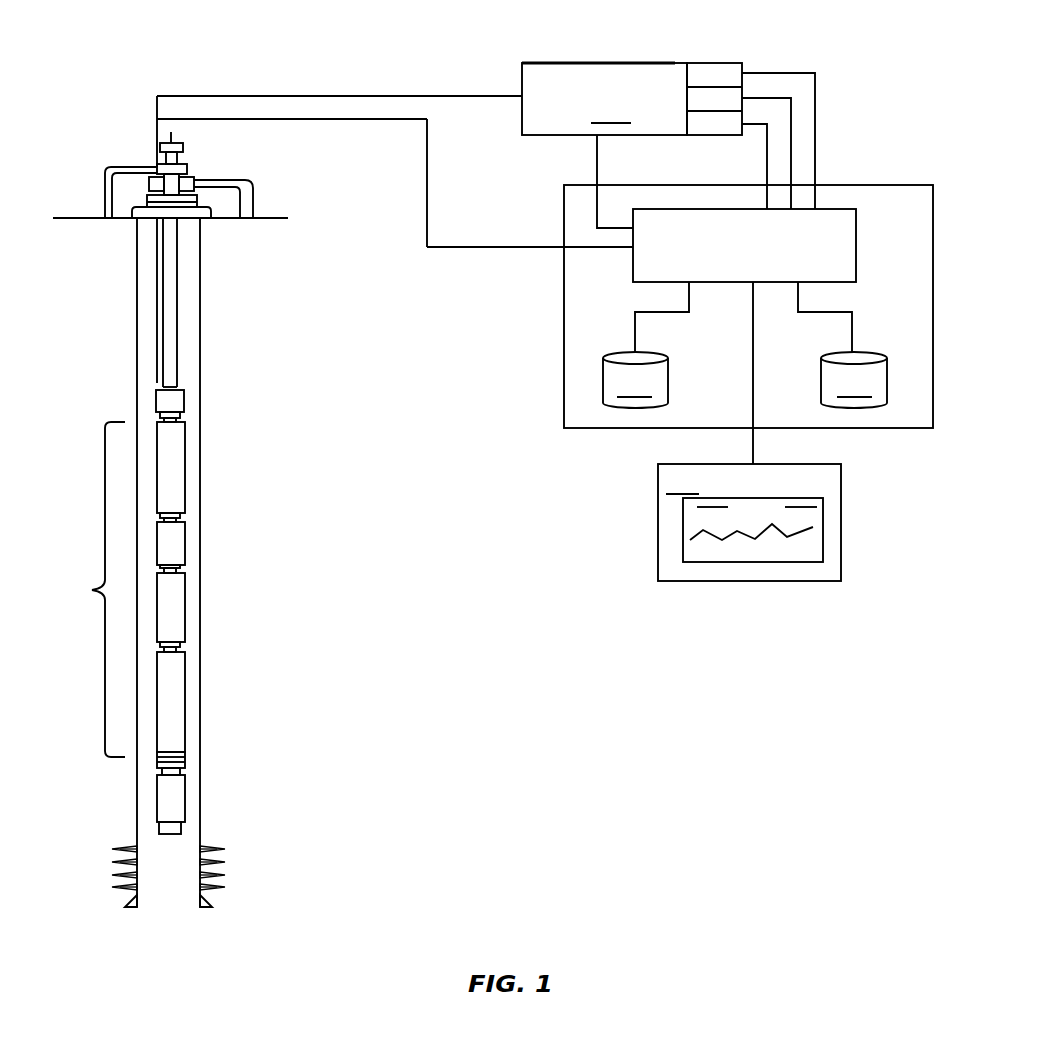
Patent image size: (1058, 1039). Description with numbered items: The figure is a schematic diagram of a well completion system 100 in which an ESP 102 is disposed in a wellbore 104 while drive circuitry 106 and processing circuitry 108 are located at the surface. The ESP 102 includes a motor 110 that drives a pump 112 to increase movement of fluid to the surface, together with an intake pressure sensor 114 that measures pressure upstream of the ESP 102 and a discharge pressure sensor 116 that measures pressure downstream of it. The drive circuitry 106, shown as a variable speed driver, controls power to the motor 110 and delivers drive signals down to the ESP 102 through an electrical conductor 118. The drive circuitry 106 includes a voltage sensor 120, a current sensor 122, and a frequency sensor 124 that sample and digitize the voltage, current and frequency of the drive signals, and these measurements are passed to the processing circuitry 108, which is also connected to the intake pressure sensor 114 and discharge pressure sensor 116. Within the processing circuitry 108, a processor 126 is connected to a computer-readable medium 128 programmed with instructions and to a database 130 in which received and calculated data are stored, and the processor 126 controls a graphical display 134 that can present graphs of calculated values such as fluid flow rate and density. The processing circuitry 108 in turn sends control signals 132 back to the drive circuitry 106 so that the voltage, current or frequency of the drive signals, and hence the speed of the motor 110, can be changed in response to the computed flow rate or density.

The well completion system 100 is at (100, 336).
The ESP 102 is at (86, 589).
The wellbore 104 is at (310, 580).
The drive circuitry 106 is at (604, 99).
The processing circuitry 108 is at (862, 185).
The motor 110 is at (172, 705).
The pump 112 is at (172, 490).
The intake pressure sensor 114 is at (172, 800).
The discharge pressure sensor 116 is at (172, 400).
The electrical conductor 118 is at (347, 95).
The voltage sensor 120 is at (700, 63).
The current sensor 122 is at (730, 100).
The frequency sensor 124 is at (730, 128).
The processor 126 is at (822, 248).
The computer-readable medium 128 is at (646, 345).
The database 130 is at (842, 345).
The control signals 132 is at (597, 170).
The graphical display 134 is at (749, 431).